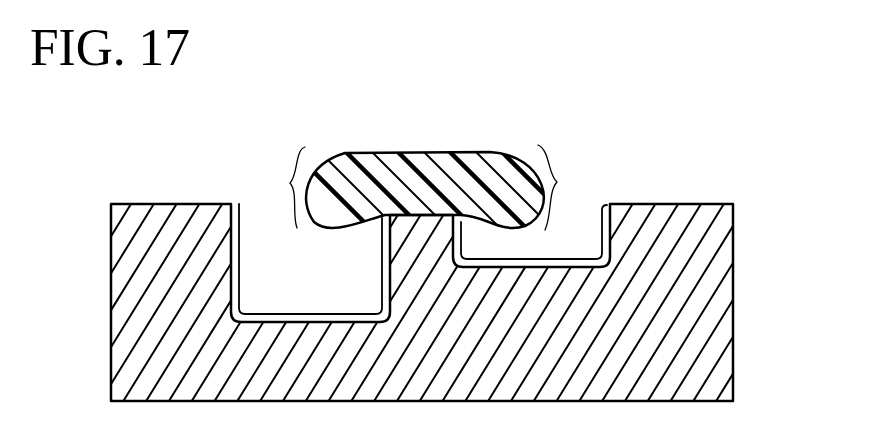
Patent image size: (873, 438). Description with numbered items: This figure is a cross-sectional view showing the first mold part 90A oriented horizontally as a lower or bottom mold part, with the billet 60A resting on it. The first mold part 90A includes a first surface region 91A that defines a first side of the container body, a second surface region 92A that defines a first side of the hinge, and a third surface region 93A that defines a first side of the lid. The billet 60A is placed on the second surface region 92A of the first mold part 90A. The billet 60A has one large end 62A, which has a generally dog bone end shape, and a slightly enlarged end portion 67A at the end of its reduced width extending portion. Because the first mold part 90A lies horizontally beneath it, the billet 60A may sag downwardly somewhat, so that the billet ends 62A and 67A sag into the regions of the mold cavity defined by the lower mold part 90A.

The first mold part 90A is at (716, 204).
The billet 60A is at (445, 148).
The large end 62A is at (290, 183).
The slightly enlarged end portion 67A is at (560, 182).
The first surface region 91A is at (249, 235).
The third surface region 93A is at (602, 220).
The second surface region 92A is at (425, 213).